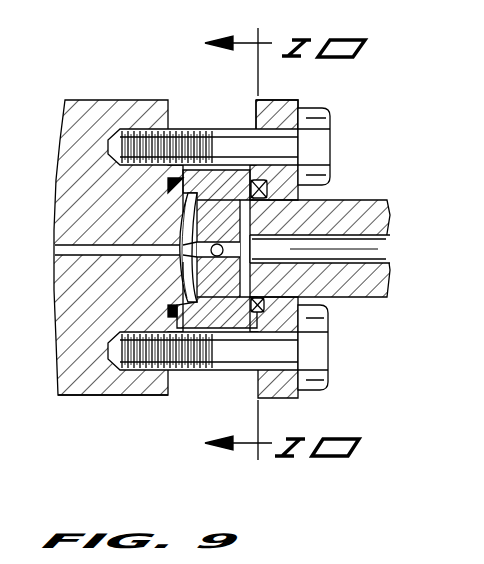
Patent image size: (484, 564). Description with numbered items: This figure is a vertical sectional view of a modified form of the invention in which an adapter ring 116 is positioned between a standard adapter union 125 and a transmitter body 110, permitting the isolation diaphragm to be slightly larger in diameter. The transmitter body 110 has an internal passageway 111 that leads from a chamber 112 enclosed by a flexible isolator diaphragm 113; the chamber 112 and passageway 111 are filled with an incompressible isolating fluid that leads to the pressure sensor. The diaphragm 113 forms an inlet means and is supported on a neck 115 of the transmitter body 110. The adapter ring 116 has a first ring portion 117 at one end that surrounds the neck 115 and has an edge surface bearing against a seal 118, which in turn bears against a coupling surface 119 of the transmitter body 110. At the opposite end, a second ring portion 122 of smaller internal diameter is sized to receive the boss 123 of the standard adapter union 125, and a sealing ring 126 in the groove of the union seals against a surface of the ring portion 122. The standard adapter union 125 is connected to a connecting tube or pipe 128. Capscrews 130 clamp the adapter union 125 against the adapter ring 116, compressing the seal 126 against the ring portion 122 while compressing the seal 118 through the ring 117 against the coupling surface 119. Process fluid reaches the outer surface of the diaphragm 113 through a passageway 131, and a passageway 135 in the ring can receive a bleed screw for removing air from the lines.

The transmitter body 110 is at (97, 108).
The internal passageway 111 is at (58, 251).
The chamber 112 is at (183, 272).
The flexible isolator diaphragm 113 is at (182, 253).
The neck 115 is at (172, 215).
The adapter ring 116 is at (211, 161).
The first ring portion 117 is at (210, 372).
The seal 118 is at (190, 132).
The coupling surface 119 is at (171, 396).
The second ring portion 122 is at (309, 170).
The boss 123 is at (258, 272).
The standard adapter union 125 is at (282, 100).
The sealing ring 126 is at (318, 200).
The connecting tube or pipe 128 is at (374, 212).
The capscrews 130 is at (318, 142).
The passageway 131 is at (369, 250).
The passageway 135 is at (251, 247).